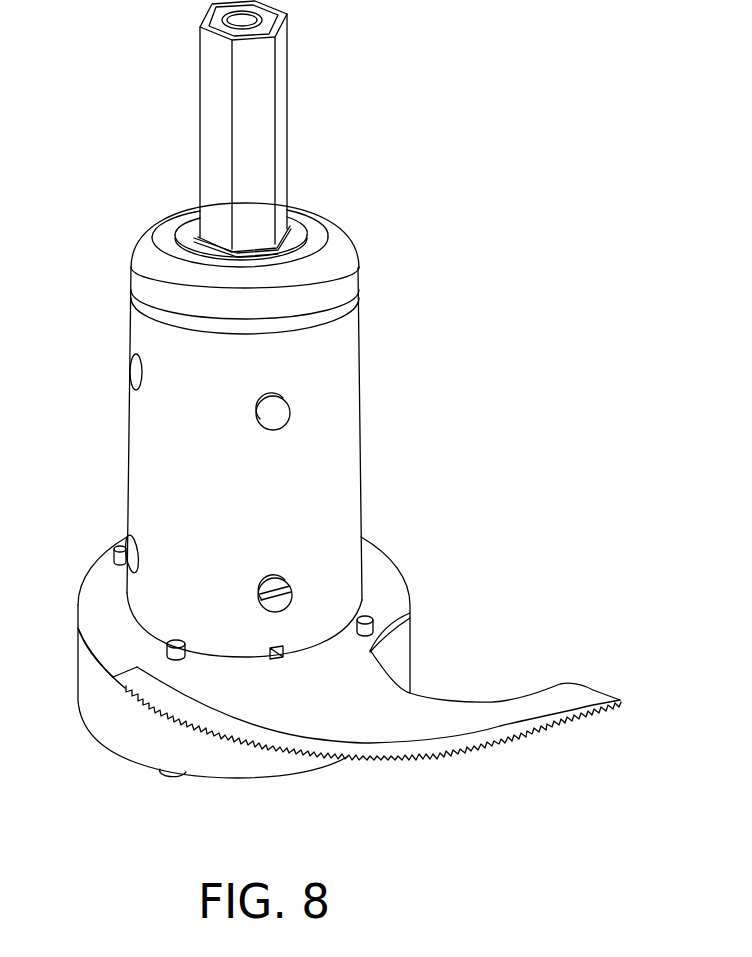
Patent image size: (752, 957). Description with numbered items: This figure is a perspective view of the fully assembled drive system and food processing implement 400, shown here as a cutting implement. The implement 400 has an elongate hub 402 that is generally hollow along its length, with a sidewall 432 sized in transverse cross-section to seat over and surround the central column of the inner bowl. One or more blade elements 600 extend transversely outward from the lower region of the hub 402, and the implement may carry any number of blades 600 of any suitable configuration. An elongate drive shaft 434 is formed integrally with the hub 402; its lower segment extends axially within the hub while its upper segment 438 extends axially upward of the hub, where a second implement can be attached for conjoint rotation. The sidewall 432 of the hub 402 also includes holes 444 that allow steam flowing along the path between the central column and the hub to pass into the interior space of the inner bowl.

The food processing implement 400 is at (350, 253).
The hub 402 is at (348, 455).
The sidewall 432 is at (163, 453).
The drive shaft 434 is at (287, 153).
The upper segment 438 is at (213, 73).
The holes 444 is at (287, 399).
The blade elements 600 is at (418, 716).